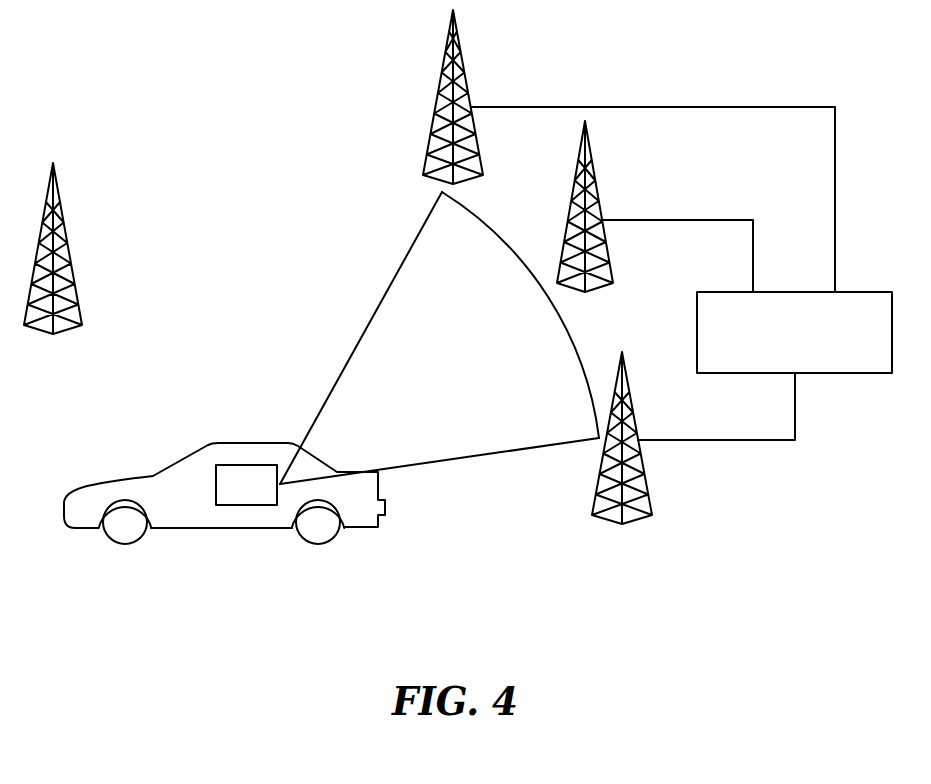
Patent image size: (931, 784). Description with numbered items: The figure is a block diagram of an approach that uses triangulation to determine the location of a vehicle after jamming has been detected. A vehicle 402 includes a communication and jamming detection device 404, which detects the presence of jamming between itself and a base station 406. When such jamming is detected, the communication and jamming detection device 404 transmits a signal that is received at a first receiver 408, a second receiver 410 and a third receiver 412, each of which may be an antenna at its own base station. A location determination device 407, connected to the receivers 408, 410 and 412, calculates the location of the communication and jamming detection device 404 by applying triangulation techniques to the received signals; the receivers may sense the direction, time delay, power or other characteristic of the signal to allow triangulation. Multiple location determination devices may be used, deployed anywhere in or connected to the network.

The vehicle 402 is at (242, 442).
The communication and jamming detection device 404 is at (263, 497).
The base station 406 is at (61, 222).
The location determination device 407 is at (825, 375).
The first receiver 408 is at (463, 73).
The second receiver 410 is at (596, 184).
The third receiver 412 is at (632, 413).